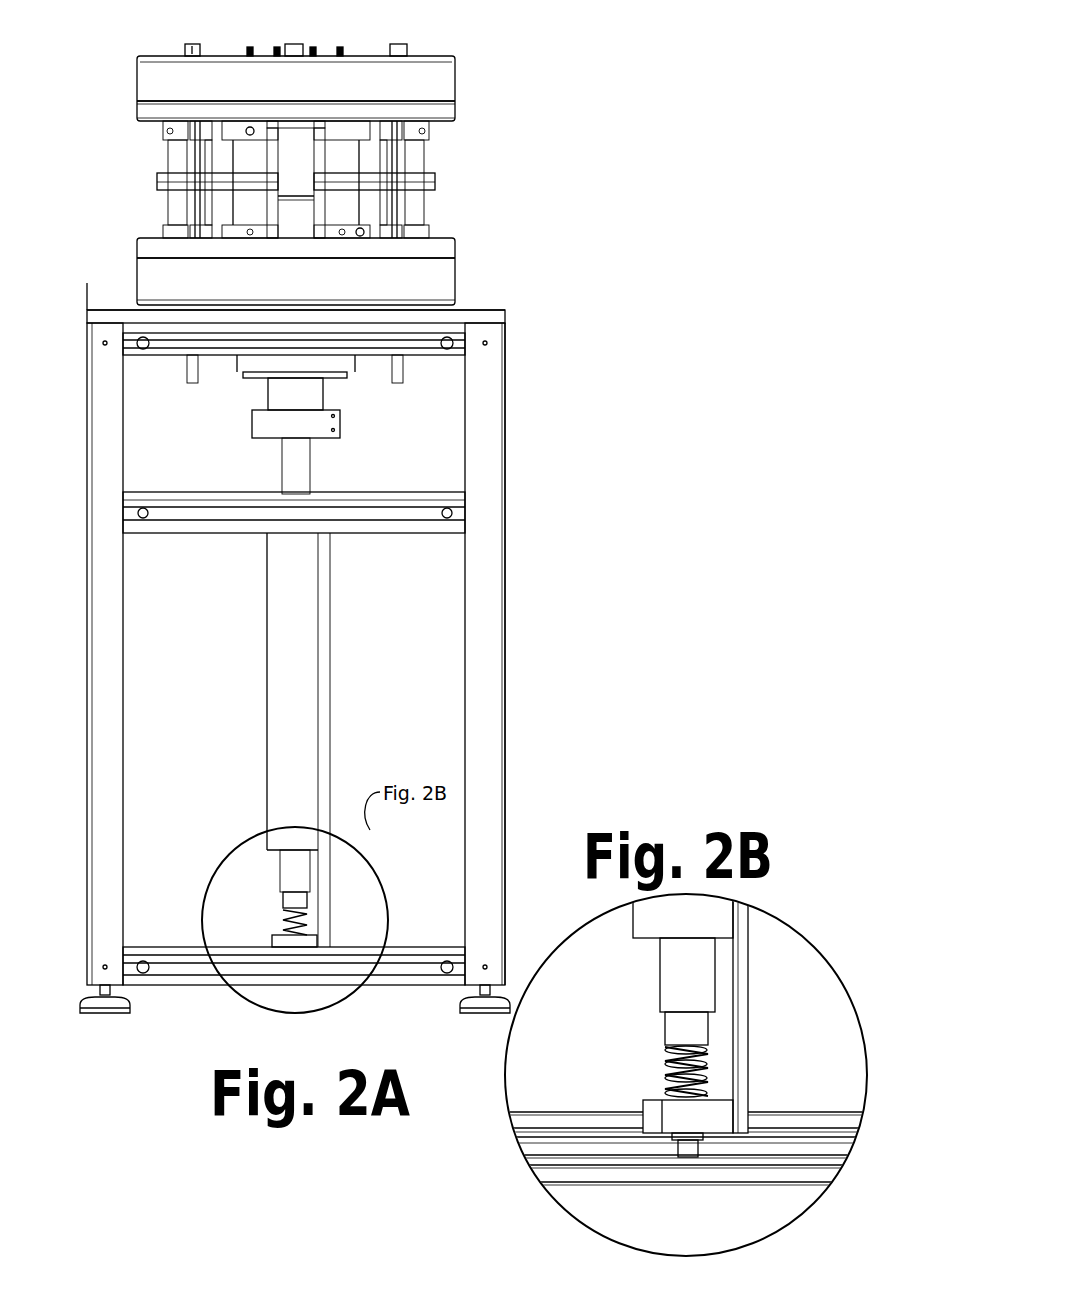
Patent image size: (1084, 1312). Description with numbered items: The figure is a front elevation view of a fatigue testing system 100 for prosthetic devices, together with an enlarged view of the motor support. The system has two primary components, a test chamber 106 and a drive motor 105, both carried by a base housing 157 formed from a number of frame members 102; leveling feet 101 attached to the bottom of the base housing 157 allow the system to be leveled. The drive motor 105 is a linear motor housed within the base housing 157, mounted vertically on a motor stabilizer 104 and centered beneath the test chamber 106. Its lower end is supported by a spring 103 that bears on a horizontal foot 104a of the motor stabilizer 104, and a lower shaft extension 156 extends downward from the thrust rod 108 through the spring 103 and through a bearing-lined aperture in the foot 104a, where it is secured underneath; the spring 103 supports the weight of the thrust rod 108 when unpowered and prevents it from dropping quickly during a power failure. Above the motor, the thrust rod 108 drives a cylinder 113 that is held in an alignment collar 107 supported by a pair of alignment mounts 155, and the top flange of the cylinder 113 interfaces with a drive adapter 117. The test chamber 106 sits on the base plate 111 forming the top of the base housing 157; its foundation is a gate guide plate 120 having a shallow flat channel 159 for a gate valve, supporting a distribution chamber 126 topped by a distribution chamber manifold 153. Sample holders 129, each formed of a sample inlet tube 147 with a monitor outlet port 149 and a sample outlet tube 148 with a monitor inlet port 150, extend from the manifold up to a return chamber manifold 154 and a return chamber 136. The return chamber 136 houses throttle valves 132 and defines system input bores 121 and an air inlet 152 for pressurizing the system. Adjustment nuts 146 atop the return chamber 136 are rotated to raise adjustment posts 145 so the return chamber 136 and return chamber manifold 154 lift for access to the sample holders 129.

In FIG. 2A, the fatigue testing system 100 is at (590, 205).
In FIG. 2A, the leveling feet 101 is at (100, 1013).
In FIG. 2A, the frame members 102 is at (447, 363).
In FIG. 2B, the frame members 102 is at (793, 1112).
In FIG. 2B, the spring 103 is at (670, 1063).
In FIG. 2A, the motor stabilizer 104 is at (328, 665).
In FIG. 2B, the motor stabilizer 104 is at (748, 1005).
In FIG. 2B, the horizontal foot 104a is at (712, 1118).
In FIG. 2A, the drive motor 105 is at (267, 706).
In FIG. 2B, the drive motor 105 is at (633, 923).
In FIG. 2A, the test chamber 106 is at (455, 120).
In FIG. 2A, the alignment collar 107 is at (252, 425).
In FIG. 2B, the thrust rod 108 is at (665, 995).
In FIG. 2A, the base plate 111 is at (505, 315).
In FIG. 2A, the cylinder 113 is at (320, 390).
In FIG. 2A, the drive adapter 117 is at (237, 368).
In FIG. 2A, the gate guide plate 120 is at (137, 303).
In FIG. 2A, the system input bores 121 is at (152, 57).
In FIG. 2A, the distribution chamber 126 is at (455, 275).
In FIG. 2A, the sample holder 129 is at (435, 180).
In FIG. 2A, the throttle valve 132 is at (252, 55).
In FIG. 2A, the return chamber 136 is at (452, 80).
In FIG. 2A, the adjustment posts 145 is at (187, 210).
In FIG. 2A, the adjustment nuts 146 is at (408, 50).
In FIG. 2A, the sample inlet tube 147 is at (415, 212).
In FIG. 2A, the sample outlet tube 148 is at (418, 155).
In FIG. 2A, the monitor outlet port 149 is at (365, 238).
In FIG. 2A, the monitor inlet port 150 is at (250, 127).
In FIG. 2A, the air inlet 152 is at (296, 45).
In FIG. 2A, the distribution chamber manifold 153 is at (137, 248).
In FIG. 2A, the return chamber manifold 154 is at (137, 112).
In FIG. 2A, the alignment mounts 155 is at (287, 463).
In FIG. 2B, the lower shaft extension 156 is at (682, 1153).
In FIG. 2A, the base housing 157 is at (505, 574).
In FIG. 2A, the flat channel 159 is at (460, 300).